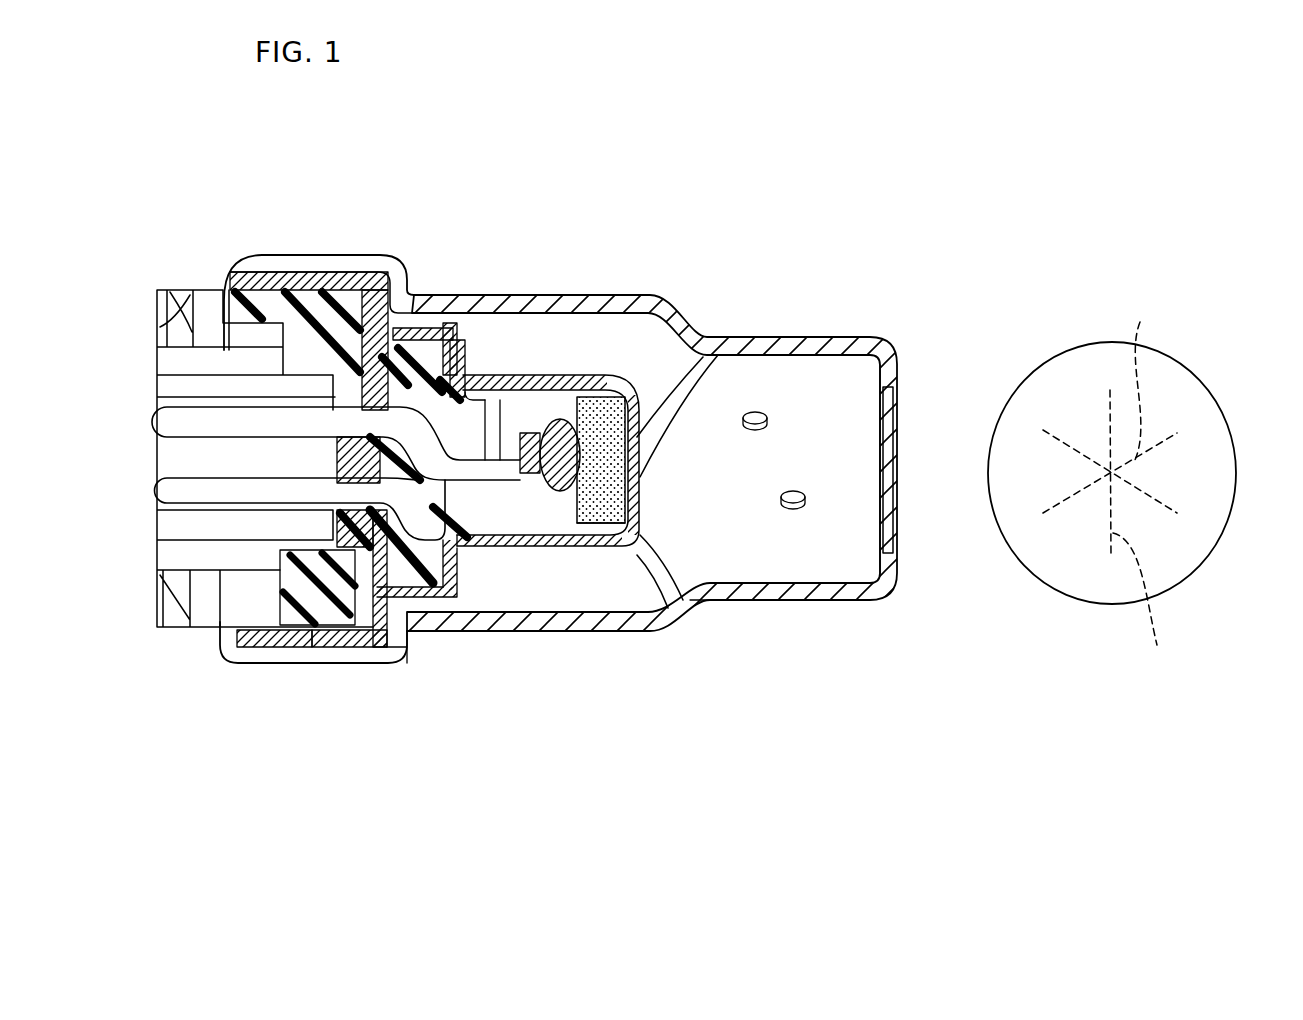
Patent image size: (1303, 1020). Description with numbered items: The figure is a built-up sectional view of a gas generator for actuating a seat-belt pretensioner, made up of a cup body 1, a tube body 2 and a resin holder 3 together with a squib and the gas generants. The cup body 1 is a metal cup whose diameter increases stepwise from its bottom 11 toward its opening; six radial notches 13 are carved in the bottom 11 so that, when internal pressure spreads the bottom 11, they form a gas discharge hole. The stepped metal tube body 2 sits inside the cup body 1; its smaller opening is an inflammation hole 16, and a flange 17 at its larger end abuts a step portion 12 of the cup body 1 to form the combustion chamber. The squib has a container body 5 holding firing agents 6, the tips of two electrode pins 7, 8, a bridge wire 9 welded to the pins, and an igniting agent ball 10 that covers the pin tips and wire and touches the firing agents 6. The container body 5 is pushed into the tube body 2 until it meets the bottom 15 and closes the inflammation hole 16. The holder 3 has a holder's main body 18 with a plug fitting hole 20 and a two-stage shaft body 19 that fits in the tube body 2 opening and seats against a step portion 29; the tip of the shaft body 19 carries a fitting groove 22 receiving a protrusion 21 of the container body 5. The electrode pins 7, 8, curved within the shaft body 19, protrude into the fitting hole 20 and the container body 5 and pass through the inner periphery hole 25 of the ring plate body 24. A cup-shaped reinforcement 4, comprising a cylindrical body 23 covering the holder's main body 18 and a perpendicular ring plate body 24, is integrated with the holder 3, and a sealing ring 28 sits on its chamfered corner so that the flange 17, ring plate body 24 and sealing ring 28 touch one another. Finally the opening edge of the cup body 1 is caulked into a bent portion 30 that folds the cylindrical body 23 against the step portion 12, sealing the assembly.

The cup body 1 is at (818, 348).
The tube body 2 is at (658, 324).
The holder 3 is at (292, 318).
The reinforcement 4 is at (315, 765).
The container body 5 is at (638, 382).
The firing agents 6 is at (640, 437).
The electrode pin 7 is at (582, 373).
The electrode pin 8 is at (497, 472).
The bridge wire 9 is at (557, 493).
The igniting agent ball 10 is at (600, 524).
The bottom 11 is at (899, 590).
The step portion 12 is at (418, 640).
The notches 13 is at (892, 453).
The bottom 15 is at (680, 598).
The inflammation hole 16 is at (645, 390).
The flange 17 is at (398, 617).
The holder's main body 18 is at (245, 305).
The shaft body 19 is at (462, 555).
The fitting hole 20 is at (192, 527).
The protrusion 21 is at (490, 392).
The fitting groove 22 is at (470, 395).
The cylindrical body 23 is at (263, 642).
The ring plate body 24 is at (315, 642).
The inner periphery hole 25 is at (356, 528).
The sealing ring 28 is at (374, 652).
The step portion 29 is at (462, 372).
The bent portion 30 is at (226, 642).